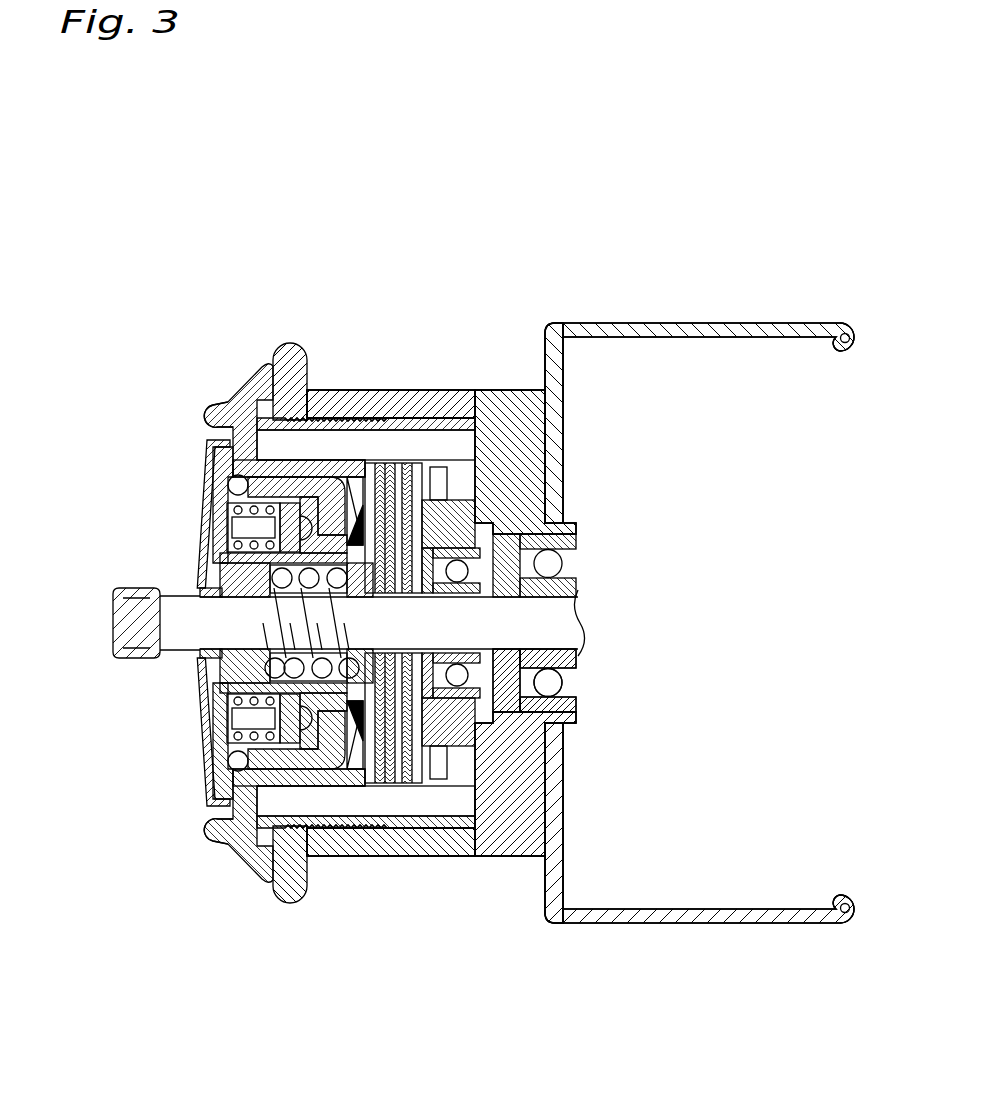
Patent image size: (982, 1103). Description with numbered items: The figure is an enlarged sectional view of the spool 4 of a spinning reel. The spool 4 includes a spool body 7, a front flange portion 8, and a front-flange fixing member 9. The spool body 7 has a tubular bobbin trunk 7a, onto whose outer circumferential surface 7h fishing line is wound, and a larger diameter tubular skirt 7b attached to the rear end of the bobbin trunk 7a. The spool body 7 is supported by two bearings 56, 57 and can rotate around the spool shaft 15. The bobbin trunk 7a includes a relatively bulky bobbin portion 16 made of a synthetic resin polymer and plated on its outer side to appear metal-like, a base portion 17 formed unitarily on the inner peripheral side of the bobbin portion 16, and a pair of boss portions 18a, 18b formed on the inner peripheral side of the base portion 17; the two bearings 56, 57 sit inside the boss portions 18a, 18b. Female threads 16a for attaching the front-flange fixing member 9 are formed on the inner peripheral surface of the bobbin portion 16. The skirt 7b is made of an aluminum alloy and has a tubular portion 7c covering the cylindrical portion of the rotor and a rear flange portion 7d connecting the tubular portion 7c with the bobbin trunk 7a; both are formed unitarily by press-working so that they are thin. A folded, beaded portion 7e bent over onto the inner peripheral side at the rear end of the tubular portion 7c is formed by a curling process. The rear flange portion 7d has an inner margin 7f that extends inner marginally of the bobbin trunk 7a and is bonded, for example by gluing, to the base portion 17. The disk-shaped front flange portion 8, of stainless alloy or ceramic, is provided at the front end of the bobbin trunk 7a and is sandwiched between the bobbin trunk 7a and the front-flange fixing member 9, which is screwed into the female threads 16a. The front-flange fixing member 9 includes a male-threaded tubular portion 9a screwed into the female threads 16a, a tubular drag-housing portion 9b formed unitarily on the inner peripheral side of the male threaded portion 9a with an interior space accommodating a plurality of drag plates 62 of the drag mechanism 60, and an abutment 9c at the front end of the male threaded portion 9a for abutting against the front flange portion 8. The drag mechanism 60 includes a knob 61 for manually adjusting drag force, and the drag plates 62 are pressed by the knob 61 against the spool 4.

The spool 4 is at (402, 335).
The spool body 7 is at (431, 370).
The bobbin trunk 7a is at (497, 390).
The skirt 7b is at (622, 300).
The tubular portion 7c is at (736, 325).
The rear flange portion 7d is at (546, 362).
The folded portion 7e is at (843, 336).
The inner margin 7f is at (553, 433).
The outer circumferential surface 7h is at (333, 390).
The front flange portion 8 is at (287, 347).
The front-flange fixing member 9 is at (234, 366).
The male-threaded tubular portion 9a is at (293, 419).
The drag-housing portion 9b is at (317, 430).
The abutment 9c is at (222, 400).
The spool shaft 15 is at (512, 633).
The bobbin portion 16 is at (452, 410).
The female threads 16a is at (357, 428).
The base portion 17 is at (513, 473).
The boss portion 18a is at (460, 697).
The boss portion 18b is at (550, 723).
The bearing 56 is at (453, 583).
The bearing 57 is at (570, 714).
The drag mechanism 60 is at (330, 786).
The knob 61 is at (210, 760).
The drag plates 62 is at (387, 780).